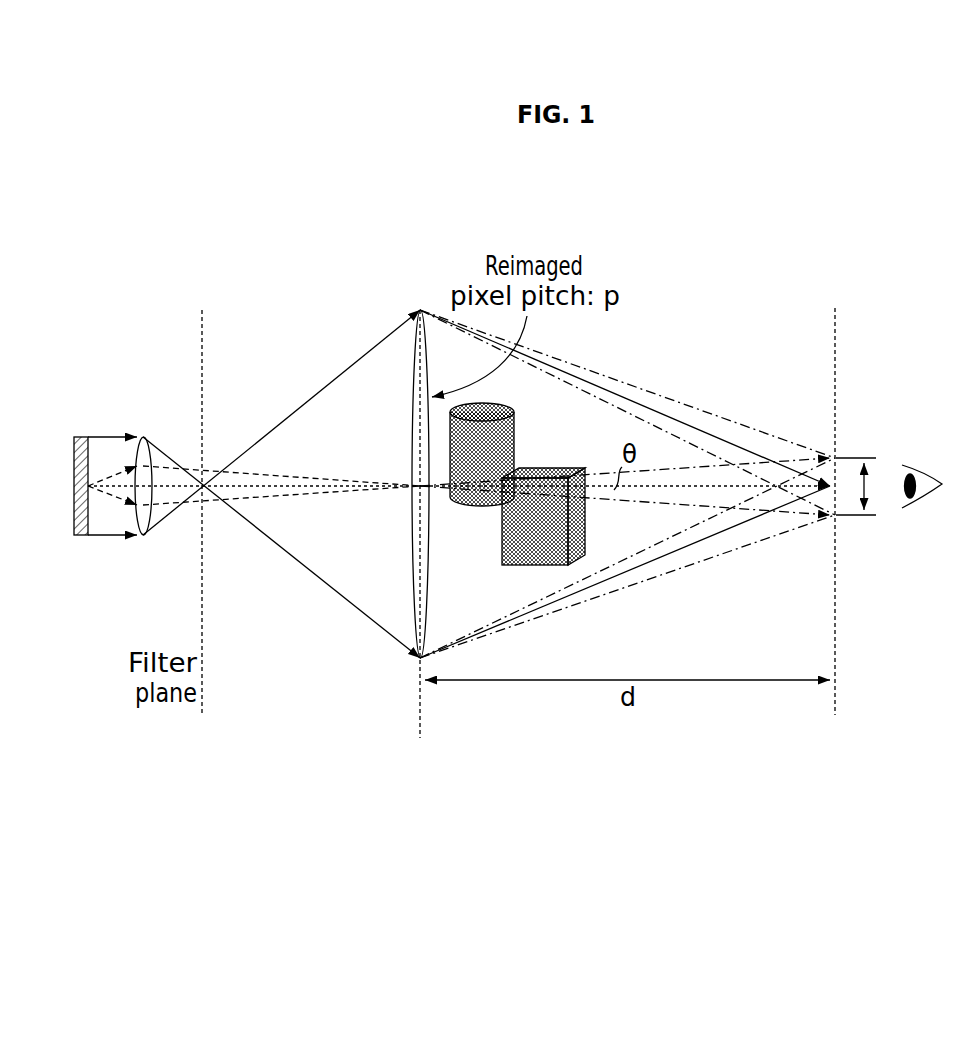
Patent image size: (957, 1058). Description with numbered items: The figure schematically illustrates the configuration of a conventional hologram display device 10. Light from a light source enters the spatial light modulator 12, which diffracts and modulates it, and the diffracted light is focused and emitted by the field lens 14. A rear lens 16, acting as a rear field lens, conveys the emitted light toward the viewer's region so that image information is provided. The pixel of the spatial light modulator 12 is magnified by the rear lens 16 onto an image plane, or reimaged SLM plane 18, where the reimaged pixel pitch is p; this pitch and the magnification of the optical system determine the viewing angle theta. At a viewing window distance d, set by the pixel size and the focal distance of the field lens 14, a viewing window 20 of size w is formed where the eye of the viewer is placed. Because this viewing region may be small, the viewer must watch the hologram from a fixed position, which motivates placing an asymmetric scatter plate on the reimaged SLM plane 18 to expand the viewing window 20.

The conventional hologram display device 10 is at (712, 265).
The spatial light modulator 12 is at (74, 449).
The field lens 14 is at (143, 537).
The rear lens 16 is at (430, 601).
The image plane (reimaged SLM plane) 18 is at (420, 738).
The viewing window 20 is at (864, 457).